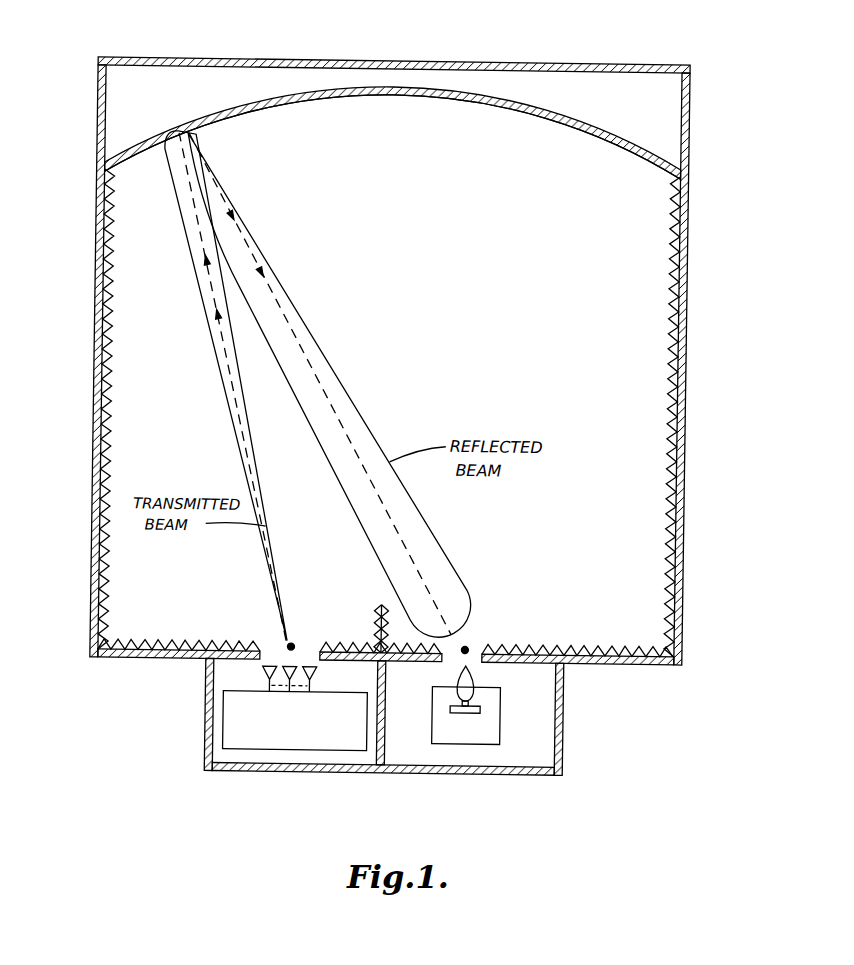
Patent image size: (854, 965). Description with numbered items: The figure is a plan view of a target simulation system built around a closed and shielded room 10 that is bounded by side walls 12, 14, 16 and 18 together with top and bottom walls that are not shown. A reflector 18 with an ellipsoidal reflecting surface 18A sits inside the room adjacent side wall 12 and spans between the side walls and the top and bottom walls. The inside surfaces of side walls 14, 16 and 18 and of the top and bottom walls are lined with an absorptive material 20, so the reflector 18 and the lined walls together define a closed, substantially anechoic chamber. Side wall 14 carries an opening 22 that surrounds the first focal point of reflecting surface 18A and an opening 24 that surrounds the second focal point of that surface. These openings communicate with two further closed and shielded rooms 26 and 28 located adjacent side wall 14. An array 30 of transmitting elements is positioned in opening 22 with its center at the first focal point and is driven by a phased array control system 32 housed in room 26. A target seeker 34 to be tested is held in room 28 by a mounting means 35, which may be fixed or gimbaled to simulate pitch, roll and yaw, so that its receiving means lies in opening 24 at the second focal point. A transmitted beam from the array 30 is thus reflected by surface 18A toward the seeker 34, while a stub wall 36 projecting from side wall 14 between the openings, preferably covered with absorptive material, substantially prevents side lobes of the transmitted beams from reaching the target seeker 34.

The closed and shielded room 10 is at (548, 257).
The side wall 12 is at (576, 62).
The side wall 14 is at (608, 664).
The side wall 16 is at (687, 408).
The reflector 18 is at (343, 88).
The ellipsoidal reflecting surface 18A is at (494, 100).
The absorptive material 20 is at (104, 272).
The opening 22 is at (282, 643).
The opening 24 is at (462, 645).
The closed and shielded room 26 is at (218, 743).
The closed and shielded room 28 is at (518, 764).
The array of transmitting elements 30 is at (258, 678).
The phased array control system 32 is at (288, 752).
The target seeker 34 is at (480, 680).
The mounting means 35 is at (492, 724).
The stub wall 36 is at (378, 612).